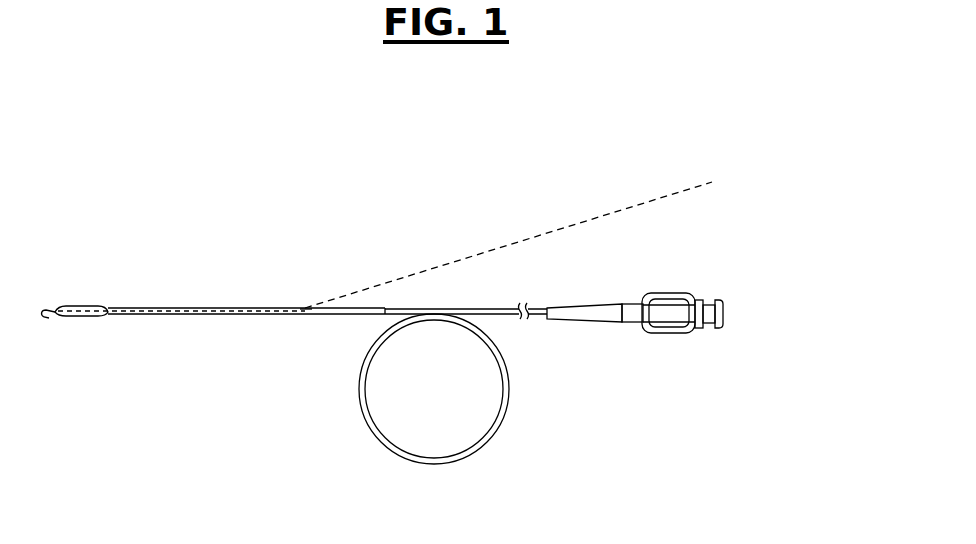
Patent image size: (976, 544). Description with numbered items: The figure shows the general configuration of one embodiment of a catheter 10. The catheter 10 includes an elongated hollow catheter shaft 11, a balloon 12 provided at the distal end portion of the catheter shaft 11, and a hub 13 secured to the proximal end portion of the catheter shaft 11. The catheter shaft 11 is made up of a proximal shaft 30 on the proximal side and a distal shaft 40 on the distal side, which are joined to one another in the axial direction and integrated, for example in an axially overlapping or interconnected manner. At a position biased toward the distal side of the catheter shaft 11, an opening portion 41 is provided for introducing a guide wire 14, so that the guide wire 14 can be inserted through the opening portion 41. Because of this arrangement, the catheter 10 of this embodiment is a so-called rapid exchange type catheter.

The catheter 10 is at (716, 290).
The catheter shaft 11 is at (511, 397).
The balloon 12 is at (90, 307).
The hub 13 is at (654, 293).
The guide wire 14 is at (503, 248).
The proximal shaft 30 is at (504, 308).
The distal shaft 40 is at (260, 308).
The opening portion 41 is at (308, 306).